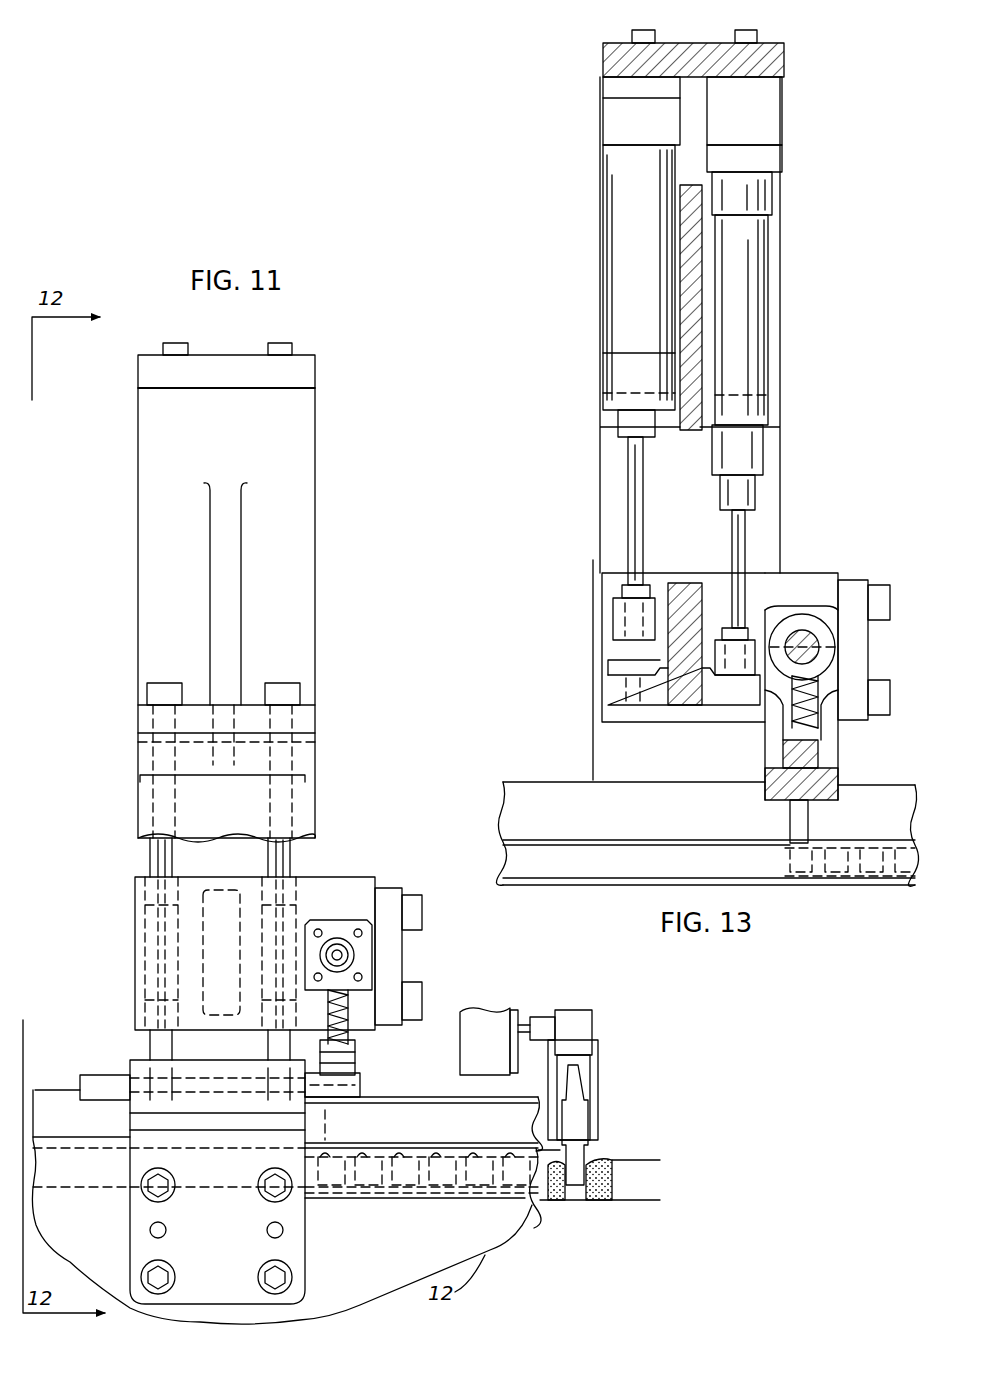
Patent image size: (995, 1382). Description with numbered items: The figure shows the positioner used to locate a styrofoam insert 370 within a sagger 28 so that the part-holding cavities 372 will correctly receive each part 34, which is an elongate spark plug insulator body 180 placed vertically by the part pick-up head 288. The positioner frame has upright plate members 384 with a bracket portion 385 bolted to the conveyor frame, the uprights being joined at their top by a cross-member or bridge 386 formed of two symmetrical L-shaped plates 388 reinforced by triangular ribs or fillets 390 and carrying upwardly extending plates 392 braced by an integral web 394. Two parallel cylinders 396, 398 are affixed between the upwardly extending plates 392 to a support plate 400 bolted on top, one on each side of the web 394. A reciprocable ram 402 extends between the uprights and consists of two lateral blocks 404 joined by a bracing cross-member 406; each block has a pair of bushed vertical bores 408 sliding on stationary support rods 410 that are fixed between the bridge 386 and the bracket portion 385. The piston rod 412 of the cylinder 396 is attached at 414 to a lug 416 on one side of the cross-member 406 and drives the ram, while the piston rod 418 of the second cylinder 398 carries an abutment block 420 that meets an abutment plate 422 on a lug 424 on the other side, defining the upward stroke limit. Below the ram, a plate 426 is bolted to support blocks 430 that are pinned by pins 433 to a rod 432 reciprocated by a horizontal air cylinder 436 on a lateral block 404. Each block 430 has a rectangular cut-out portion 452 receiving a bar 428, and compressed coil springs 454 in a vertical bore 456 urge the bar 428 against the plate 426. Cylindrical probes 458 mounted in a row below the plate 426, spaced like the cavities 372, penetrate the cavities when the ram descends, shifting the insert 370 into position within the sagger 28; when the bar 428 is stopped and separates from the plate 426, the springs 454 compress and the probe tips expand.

In FIG. 13, the sagger 28 is at (893, 812).
In FIG. 11, the part 34 is at (578, 1085).
In FIG. 11, the spark plug insulator body 180 is at (585, 1143).
In FIG. 11, the part pick-up head 288 is at (592, 1012).
In FIG. 11, the styrofoam insert 370 is at (604, 1202).
In FIG. 13, the styrofoam insert 370 is at (760, 850).
In FIG. 11, the part-holding cavities 372 is at (372, 1192).
In FIG. 13, the part-holding cavities 372 is at (880, 872).
In FIG. 11, the upright plate members 384 is at (305, 805).
In FIG. 13, the upright plate members 384 is at (780, 510).
In FIG. 11, the bracket portion 385 is at (300, 1212).
In FIG. 11, the cross-member or bridge 386 is at (315, 622).
In FIG. 13, the cross-member or bridge 386 is at (785, 422).
In FIG. 11, the L-shaped plates 388 is at (315, 718).
In FIG. 11, the ribs or fillets 390 is at (244, 598).
In FIG. 11, the upwardly extending plates 392 is at (300, 505).
In FIG. 13, the upwardly extending plates 392 is at (780, 356).
In FIG. 13, the web 394 is at (680, 272).
In FIG. 13, the air cylinder 396 is at (770, 318).
In FIG. 13, the second air cylinder 398 is at (612, 330).
In FIG. 11, the support plate 400 is at (316, 370).
In FIG. 13, the support plate 400 is at (680, 43).
In FIG. 11, the ram 402 is at (356, 878).
In FIG. 13, the ram 402 is at (825, 576).
In FIG. 11, the lateral blocks 404 is at (365, 905).
In FIG. 13, the lateral blocks 404 is at (808, 580).
In FIG. 11, the bracing cross-member 406 is at (210, 892).
In FIG. 13, the bracing cross-member 406 is at (688, 583).
In FIG. 11, the vertical parallel bores 408 is at (150, 960).
In FIG. 11, the stationary support rods 410 is at (150, 862).
In FIG. 13, the piston rod 412 is at (742, 560).
In FIG. 13, the attachment 414 is at (755, 630).
In FIG. 13, the lug 416 is at (712, 705).
In FIG. 13, the piston rod 418 is at (630, 498).
In FIG. 13, the abutment block 420 is at (612, 622).
In FIG. 13, the abutment plate 422 is at (608, 665).
In FIG. 13, the lug 424 is at (620, 705).
In FIG. 11, the plate 426 is at (360, 1085).
In FIG. 13, the plate 426 is at (838, 786).
In FIG. 11, the bar 428 is at (483, 1072).
In FIG. 13, the bar 428 is at (820, 755).
In FIG. 11, the support blocks 430 is at (360, 1045).
In FIG. 13, the support blocks 430 is at (832, 700).
In FIG. 13, the rod 432 is at (806, 625).
In FIG. 13, the pins 433 is at (820, 647).
In FIG. 11, the air cylinder 436 is at (355, 955).
In FIG. 11, the rectangular cut-out portion 452 is at (345, 1062).
In FIG. 13, the rectangular cut-out portion 452 is at (812, 812).
In FIG. 11, the compressed coil springs 454 is at (345, 1000).
In FIG. 13, the compressed coil springs 454 is at (818, 690).
In FIG. 11, the vertical bore 456 is at (345, 1022).
In FIG. 13, the vertical bore 456 is at (795, 705).
In FIG. 11, the cylindrical probes 458 is at (348, 1128).
In FIG. 13, the cylindrical probes 458 is at (788, 818).